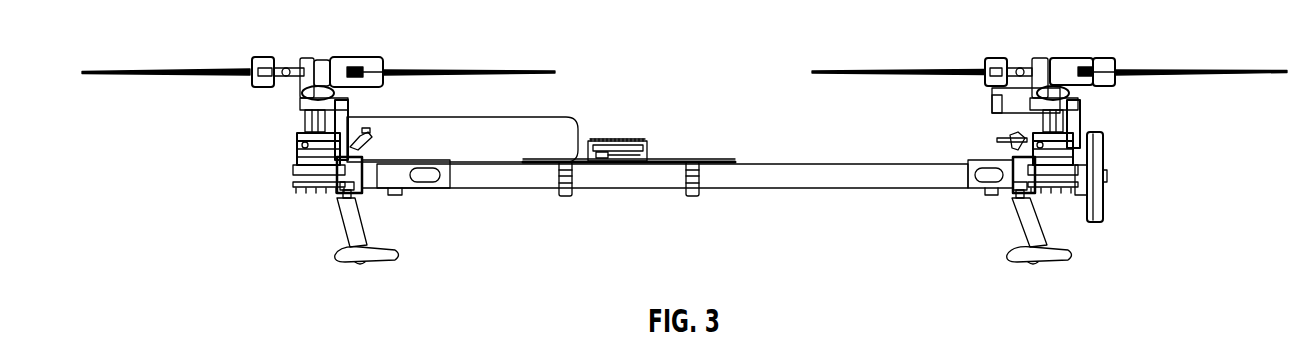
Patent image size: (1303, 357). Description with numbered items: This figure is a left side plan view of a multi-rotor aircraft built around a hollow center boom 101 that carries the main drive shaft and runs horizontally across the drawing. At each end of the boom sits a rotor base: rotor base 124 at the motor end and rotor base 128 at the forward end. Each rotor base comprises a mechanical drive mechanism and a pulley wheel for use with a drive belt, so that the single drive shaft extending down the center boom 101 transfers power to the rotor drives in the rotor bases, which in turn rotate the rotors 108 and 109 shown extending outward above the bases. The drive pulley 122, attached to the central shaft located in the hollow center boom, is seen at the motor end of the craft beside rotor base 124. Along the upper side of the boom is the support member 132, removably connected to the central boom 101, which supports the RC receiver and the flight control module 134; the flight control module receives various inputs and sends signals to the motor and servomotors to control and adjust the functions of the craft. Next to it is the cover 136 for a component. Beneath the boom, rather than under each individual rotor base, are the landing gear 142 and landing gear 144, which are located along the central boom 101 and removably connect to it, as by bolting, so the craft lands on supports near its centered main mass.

The center boom 101 is at (792, 190).
The rotor 108 is at (1203, 69).
The rotor 109 is at (481, 69).
The drive pulley 122 is at (1108, 162).
The rotor base 124 is at (1080, 127).
The rotor base 128 is at (298, 140).
The support member 132 is at (718, 160).
The flight control module 134 is at (625, 138).
The cover 136 is at (481, 115).
The landing gear 142 is at (1013, 228).
The landing gear 144 is at (340, 227).